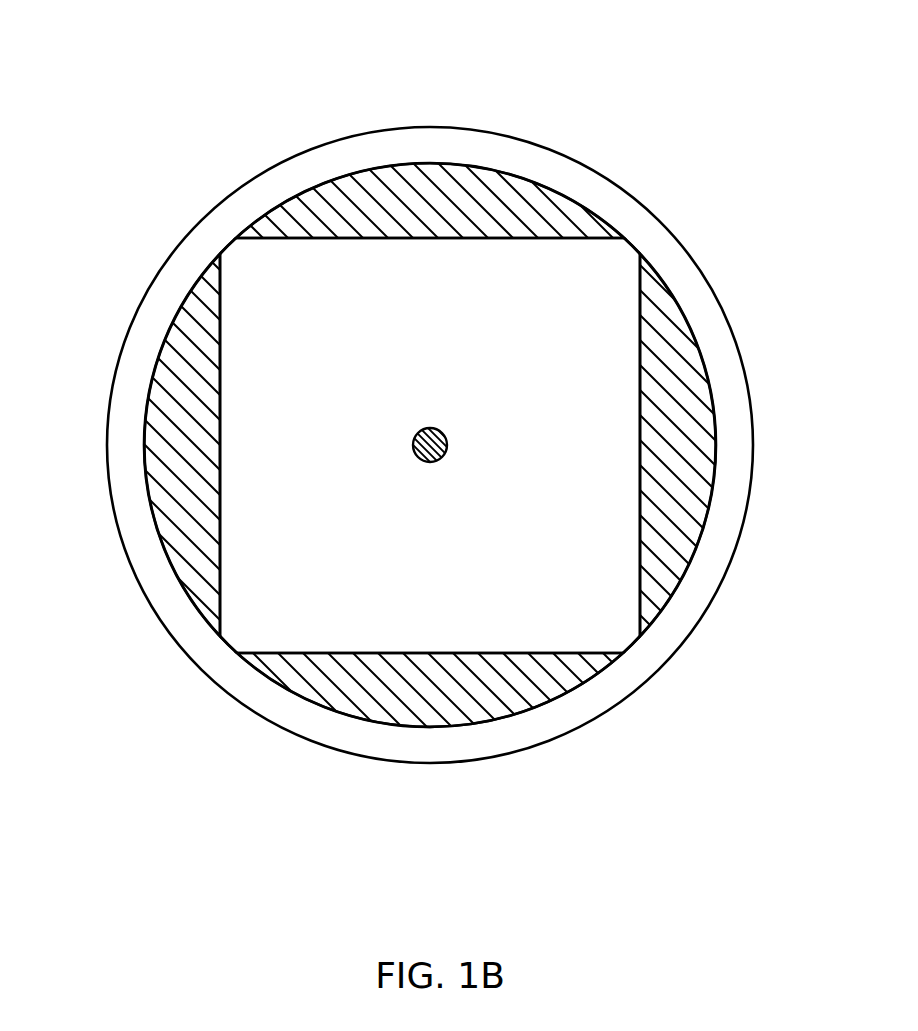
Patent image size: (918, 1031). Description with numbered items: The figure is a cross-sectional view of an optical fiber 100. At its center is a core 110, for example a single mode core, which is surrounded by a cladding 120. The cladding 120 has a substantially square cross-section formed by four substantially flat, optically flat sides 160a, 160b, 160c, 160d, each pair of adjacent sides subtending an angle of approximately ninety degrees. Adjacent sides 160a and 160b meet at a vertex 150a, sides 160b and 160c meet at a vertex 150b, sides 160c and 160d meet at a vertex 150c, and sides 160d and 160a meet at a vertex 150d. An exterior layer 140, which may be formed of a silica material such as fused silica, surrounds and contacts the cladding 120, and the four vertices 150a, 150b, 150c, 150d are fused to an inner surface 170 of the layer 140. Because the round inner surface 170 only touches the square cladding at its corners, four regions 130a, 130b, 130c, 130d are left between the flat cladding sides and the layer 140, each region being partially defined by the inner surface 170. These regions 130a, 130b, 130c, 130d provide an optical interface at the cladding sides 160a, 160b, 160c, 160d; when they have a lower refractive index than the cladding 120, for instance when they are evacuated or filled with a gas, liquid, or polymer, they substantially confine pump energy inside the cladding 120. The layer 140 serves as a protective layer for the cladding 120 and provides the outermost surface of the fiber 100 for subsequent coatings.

The optical fiber 100 is at (707, 84).
The core 110 is at (418, 432).
The cladding 120 is at (322, 620).
The region 130a is at (470, 713).
The region 130b is at (688, 530).
The region 130c is at (405, 200).
The region 130d is at (163, 477).
The exterior layer 140 is at (733, 395).
The vertex 150a is at (628, 648).
The vertex 150b is at (637, 247).
The vertex 150c is at (233, 250).
The vertex 150d is at (227, 647).
The side 160a is at (393, 660).
The side 160b is at (643, 420).
The side 160c is at (485, 230).
The side 160d is at (217, 393).
The inner surface 170 is at (705, 357).